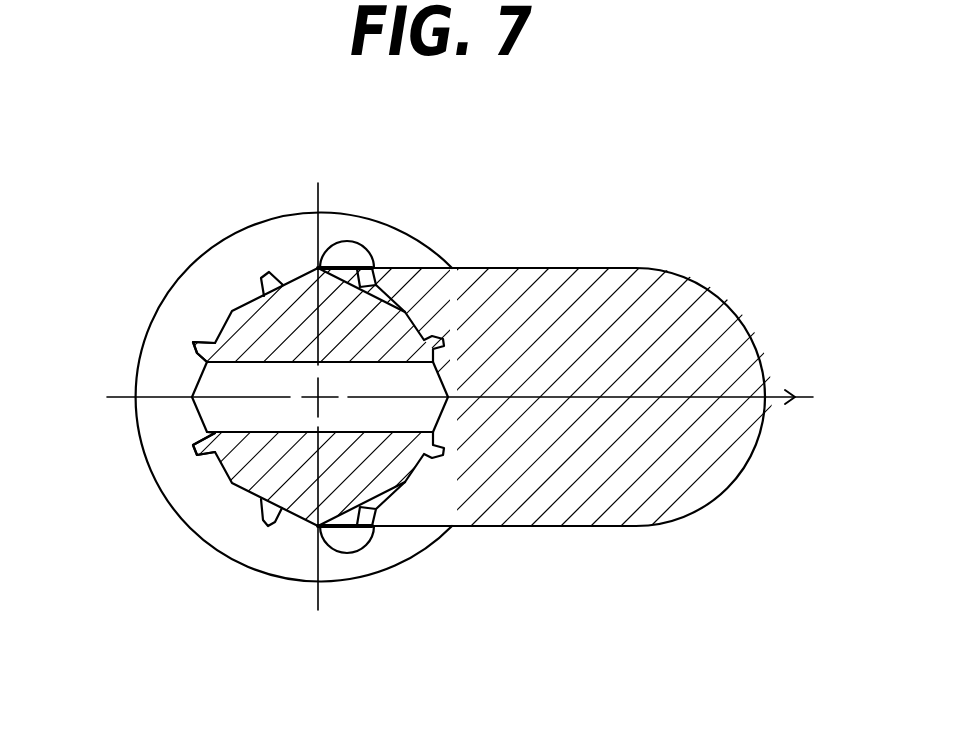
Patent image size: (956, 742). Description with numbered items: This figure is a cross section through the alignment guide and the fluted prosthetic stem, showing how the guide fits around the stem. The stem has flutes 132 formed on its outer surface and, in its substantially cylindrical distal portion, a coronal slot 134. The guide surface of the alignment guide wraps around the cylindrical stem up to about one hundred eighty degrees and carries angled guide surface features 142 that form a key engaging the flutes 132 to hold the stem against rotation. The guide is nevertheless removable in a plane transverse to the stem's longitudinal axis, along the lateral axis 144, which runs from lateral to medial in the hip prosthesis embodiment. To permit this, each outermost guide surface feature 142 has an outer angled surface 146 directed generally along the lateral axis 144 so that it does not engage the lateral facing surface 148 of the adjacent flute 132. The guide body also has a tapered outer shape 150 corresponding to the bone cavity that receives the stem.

The flute 132 is at (264, 272).
The slot 134 is at (208, 378).
The angled guide surface features 142 is at (377, 278).
The lateral axis 144 is at (777, 397).
The outer angled surface 146 is at (344, 528).
The lateral facing surface 148 is at (358, 529).
The tapered outer shape 150 is at (743, 327).